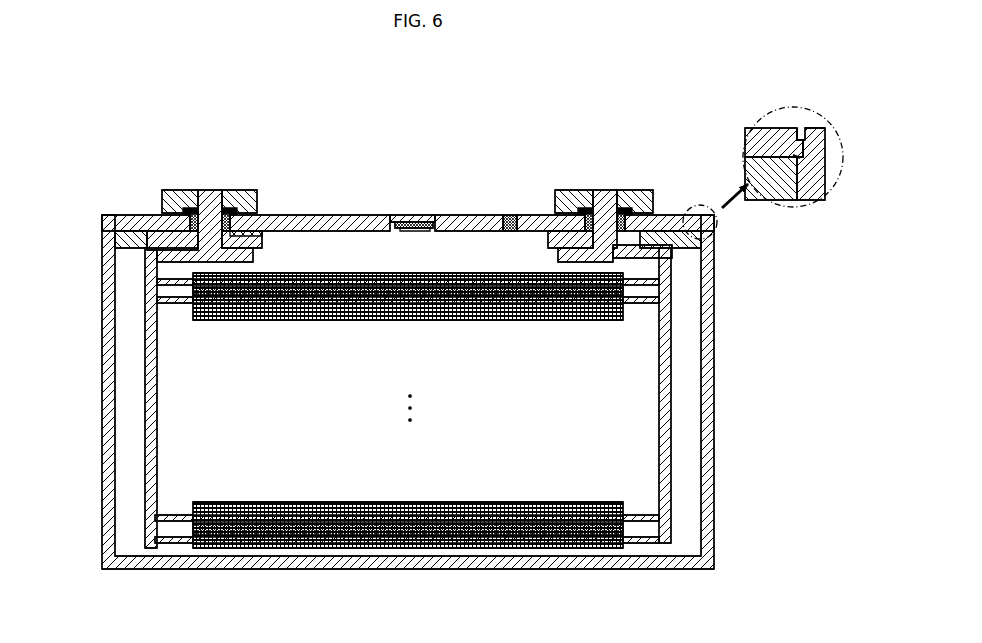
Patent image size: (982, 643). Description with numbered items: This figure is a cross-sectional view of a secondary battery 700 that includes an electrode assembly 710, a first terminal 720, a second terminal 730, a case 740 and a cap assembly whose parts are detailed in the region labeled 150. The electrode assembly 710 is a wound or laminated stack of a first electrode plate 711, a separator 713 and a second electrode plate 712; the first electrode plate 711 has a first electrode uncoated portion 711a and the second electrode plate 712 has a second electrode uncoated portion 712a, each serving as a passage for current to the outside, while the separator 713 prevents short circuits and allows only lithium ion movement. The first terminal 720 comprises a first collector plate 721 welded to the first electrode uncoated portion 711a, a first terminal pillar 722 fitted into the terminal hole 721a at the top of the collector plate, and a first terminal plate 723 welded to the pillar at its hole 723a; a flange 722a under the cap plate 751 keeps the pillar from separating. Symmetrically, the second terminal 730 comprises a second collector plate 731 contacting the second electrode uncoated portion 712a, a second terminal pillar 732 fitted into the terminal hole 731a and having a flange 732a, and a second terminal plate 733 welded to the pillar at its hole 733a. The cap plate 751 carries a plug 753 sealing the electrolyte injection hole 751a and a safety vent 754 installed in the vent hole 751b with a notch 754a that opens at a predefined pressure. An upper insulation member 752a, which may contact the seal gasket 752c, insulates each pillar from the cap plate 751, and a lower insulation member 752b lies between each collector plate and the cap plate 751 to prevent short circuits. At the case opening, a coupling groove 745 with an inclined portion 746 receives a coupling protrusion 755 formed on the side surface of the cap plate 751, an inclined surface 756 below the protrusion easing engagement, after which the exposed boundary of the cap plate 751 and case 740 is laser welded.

The secondary battery 700 is at (34, 79).
The electrode assembly 710 is at (489, 557).
The first electrode plate 711 is at (292, 548).
The first electrode uncoated portion 711a is at (174, 545).
The second electrode plate 712 is at (553, 548).
The second electrode uncoated portion 712a is at (640, 545).
The separator 713 is at (421, 548).
The first terminal 720 is at (250, 130).
The first collector plate 721 is at (152, 231).
The terminal hole 721a is at (150, 275).
The first terminal pillar 722 is at (187, 190).
The flange 722a is at (250, 240).
The first terminal plate 723 is at (240, 190).
The hole 723a is at (214, 208).
The second terminal 730 is at (565, 130).
The second collector plate 731 is at (665, 232).
The terminal hole 731a is at (620, 258).
The second terminal pillar 732 is at (634, 190).
The flange 732a is at (570, 240).
The second terminal plate 733 is at (574, 190).
The hole 733a is at (605, 208).
The case 740 is at (714, 333).
The coupling groove 745 is at (815, 135).
The inclined portion 746 is at (797, 133).
The coupling protrusion 755 is at (805, 145).
The inclined surface 756 is at (790, 160).
The cap plate 751 is at (463, 216).
The electrolyte injection hole 751a is at (507, 231).
The vent hole 751b is at (413, 231).
The upper insulation member 752a is at (229, 220).
The lower insulation member 752b is at (126, 240).
The seal gasket 752c is at (250, 233).
The plug 753 is at (510, 215).
The safety vent 754 is at (430, 222).
The notch 754a is at (400, 221).
The cap assembly 150 is at (476, 139).